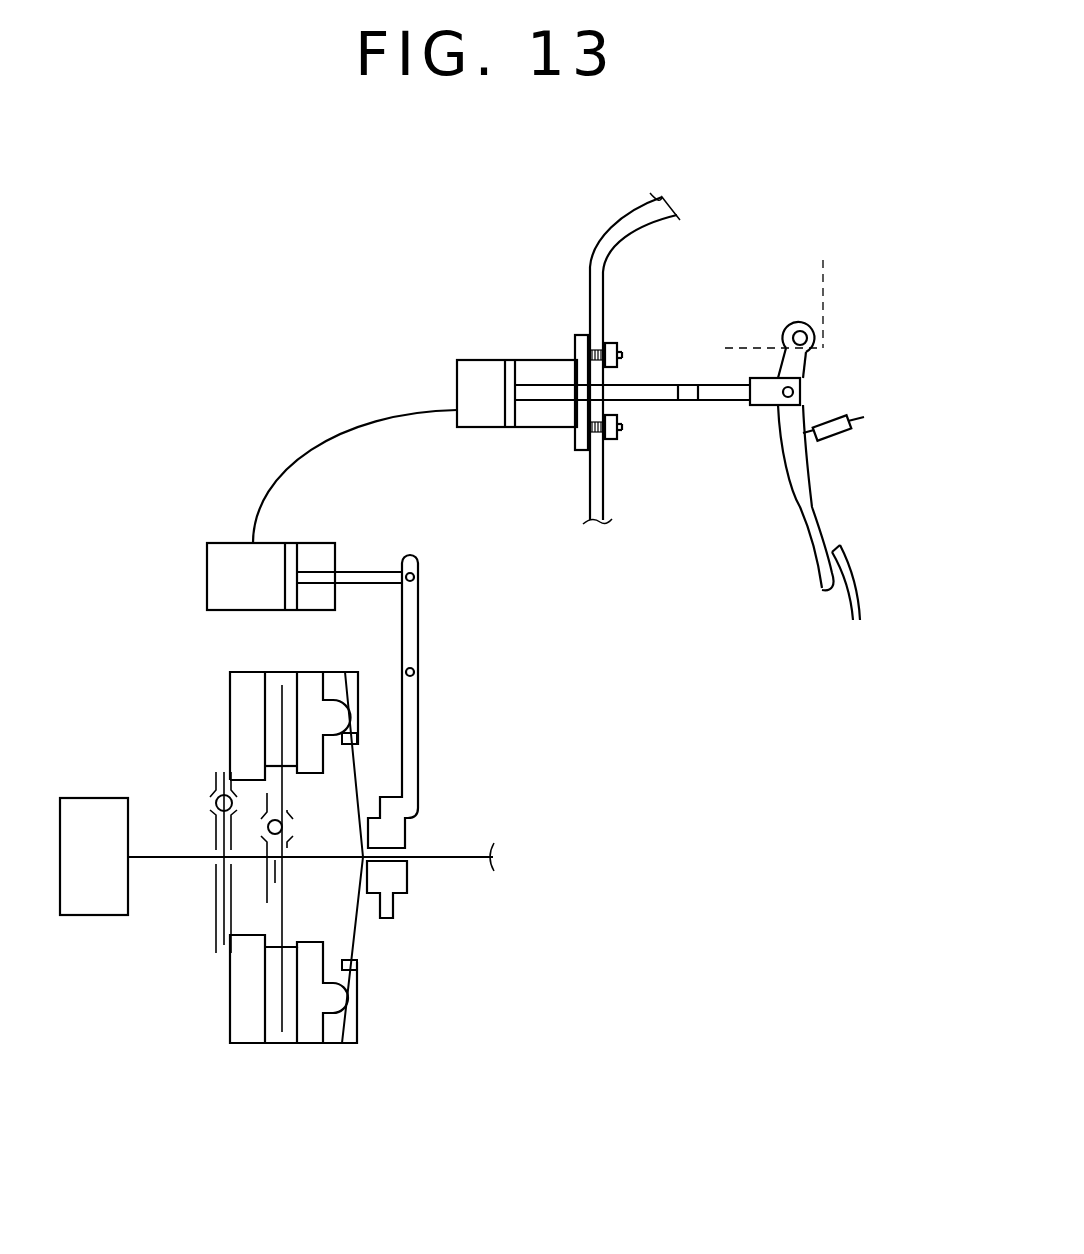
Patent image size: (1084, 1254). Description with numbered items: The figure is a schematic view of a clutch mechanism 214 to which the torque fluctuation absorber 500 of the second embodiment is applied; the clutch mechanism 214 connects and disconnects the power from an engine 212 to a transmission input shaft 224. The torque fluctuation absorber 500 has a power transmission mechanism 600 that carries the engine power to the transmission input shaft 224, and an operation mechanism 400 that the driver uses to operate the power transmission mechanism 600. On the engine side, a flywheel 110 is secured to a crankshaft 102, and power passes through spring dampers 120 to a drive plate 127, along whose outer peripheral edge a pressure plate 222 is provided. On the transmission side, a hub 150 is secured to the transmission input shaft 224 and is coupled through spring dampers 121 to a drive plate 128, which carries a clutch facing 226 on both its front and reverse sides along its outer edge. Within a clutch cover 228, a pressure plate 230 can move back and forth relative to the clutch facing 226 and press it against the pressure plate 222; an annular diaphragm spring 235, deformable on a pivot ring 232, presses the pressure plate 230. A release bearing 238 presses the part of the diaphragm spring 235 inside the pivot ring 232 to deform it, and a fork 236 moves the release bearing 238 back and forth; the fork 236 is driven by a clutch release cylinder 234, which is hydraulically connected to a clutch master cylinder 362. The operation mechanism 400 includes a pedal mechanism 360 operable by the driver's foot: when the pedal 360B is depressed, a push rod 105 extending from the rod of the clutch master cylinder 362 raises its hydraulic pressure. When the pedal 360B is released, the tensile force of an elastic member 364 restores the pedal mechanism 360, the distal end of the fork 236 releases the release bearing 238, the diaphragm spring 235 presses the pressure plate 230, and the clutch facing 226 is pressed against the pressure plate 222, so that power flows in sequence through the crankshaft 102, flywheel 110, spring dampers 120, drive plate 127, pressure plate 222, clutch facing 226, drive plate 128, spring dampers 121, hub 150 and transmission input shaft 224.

The crankshaft 102 is at (172, 858).
The push rod 105 is at (712, 402).
The flywheel 110 is at (222, 830).
The spring dampers 120 is at (212, 800).
The spring dampers 121 is at (287, 825).
The drive plate 127 is at (215, 940).
The drive plate 128 is at (282, 917).
The hub 150 is at (276, 878).
The engine 212 is at (97, 798).
The clutch mechanism 214 is at (268, 400).
The pressure plate 222 is at (240, 710).
The transmission input shaft 224 is at (467, 860).
The clutch facing 226 is at (275, 1002).
The clutch cover 228 is at (345, 672).
The pressure plate 230 is at (310, 1035).
The pivot ring 232 is at (357, 963).
The clutch release cylinder 234 is at (207, 577).
The diaphragm spring 235 is at (347, 1030).
The fork 236 is at (408, 622).
The release bearing 238 is at (395, 882).
The pedal mechanism 360 is at (808, 548).
The pedal 360B is at (847, 578).
The clutch master cylinder 362 is at (540, 428).
The elastic member 364 is at (836, 440).
The operation mechanism 400 is at (670, 447).
The torque fluctuation absorber 500 is at (203, 782).
The power transmission mechanism 600 is at (355, 1058).